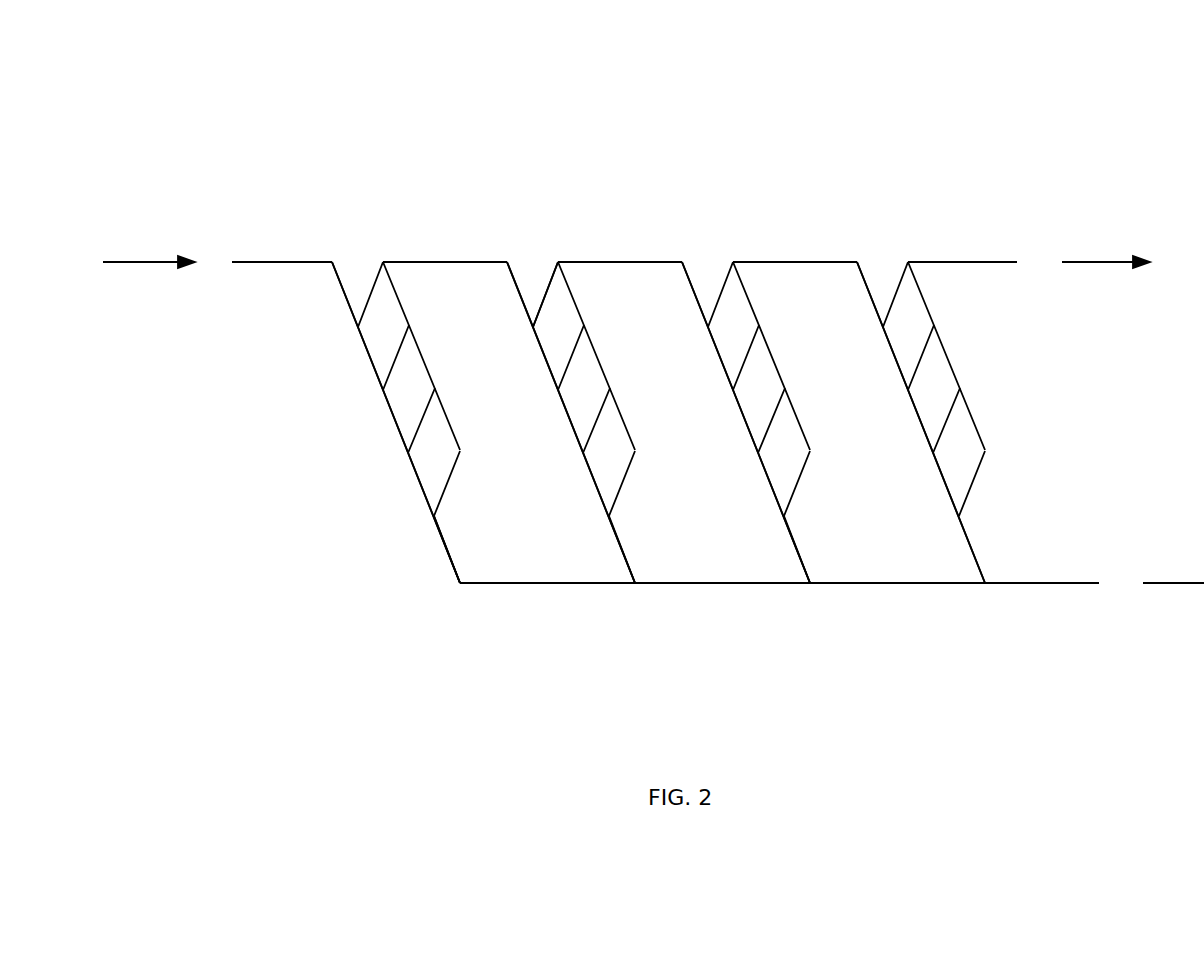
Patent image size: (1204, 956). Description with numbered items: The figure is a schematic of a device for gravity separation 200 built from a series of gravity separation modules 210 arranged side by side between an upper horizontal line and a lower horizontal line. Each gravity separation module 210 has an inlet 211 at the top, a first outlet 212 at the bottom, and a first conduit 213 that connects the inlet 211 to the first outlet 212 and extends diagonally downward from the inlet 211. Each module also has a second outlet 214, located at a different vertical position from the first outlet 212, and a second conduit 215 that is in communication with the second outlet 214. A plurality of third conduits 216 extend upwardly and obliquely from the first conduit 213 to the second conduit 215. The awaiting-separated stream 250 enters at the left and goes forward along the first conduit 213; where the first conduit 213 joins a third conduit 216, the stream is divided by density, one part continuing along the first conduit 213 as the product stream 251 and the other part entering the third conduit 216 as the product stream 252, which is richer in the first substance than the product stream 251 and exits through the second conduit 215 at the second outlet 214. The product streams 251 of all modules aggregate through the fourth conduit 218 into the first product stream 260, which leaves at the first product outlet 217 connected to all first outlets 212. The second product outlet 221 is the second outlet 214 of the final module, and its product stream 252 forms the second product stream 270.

The device for gravity separation 200 is at (1045, 123).
The gravity separation module 210 is at (324, 240).
The inlet 211 is at (290, 270).
The first outlet 212 is at (443, 543).
The first conduit 213 is at (372, 362).
The second outlet 214 is at (400, 262).
The second conduit 215 is at (423, 355).
The third conduit 216 is at (372, 295).
The first product outlet 217 is at (1044, 583).
The fourth conduit 218 is at (720, 590).
The second product outlet 221 is at (963, 262).
The awaiting-separated stream 250 is at (150, 270).
The product stream of the first outlet 251 is at (457, 567).
The product stream of the third conduit 252 is at (546, 295).
The first product stream 260 is at (1187, 583).
The second product stream 270 is at (1105, 262).